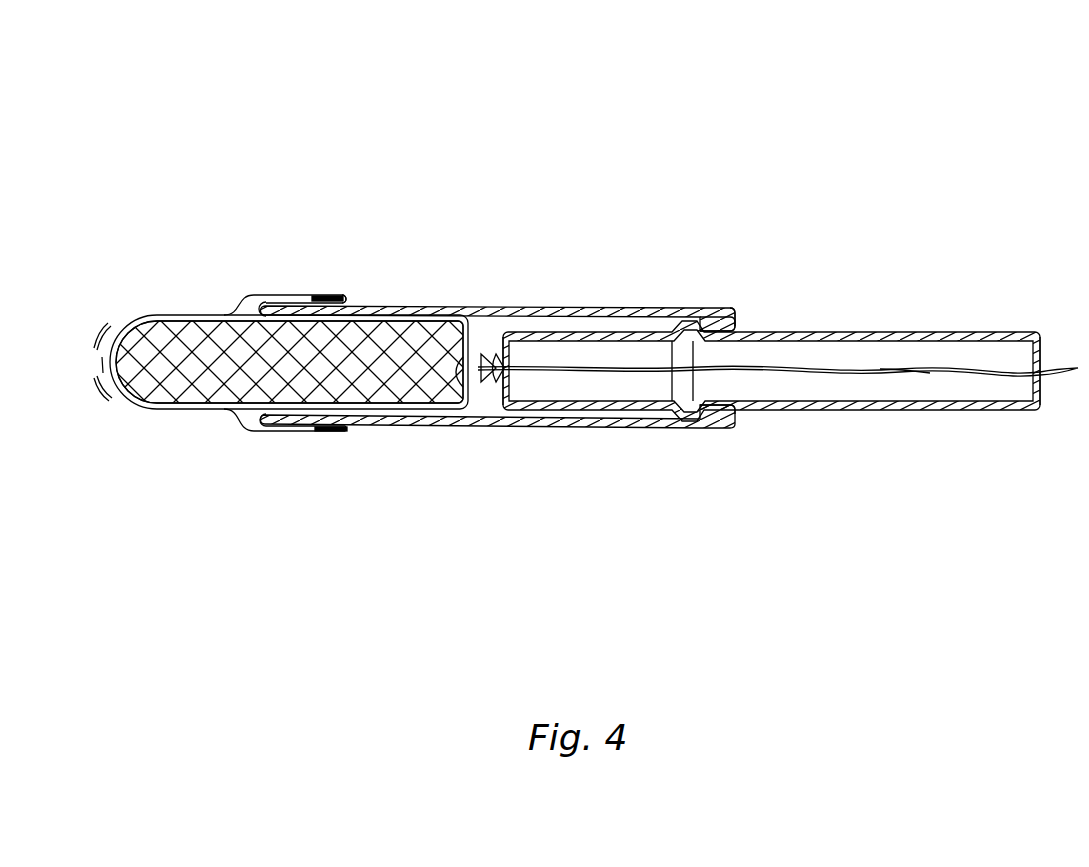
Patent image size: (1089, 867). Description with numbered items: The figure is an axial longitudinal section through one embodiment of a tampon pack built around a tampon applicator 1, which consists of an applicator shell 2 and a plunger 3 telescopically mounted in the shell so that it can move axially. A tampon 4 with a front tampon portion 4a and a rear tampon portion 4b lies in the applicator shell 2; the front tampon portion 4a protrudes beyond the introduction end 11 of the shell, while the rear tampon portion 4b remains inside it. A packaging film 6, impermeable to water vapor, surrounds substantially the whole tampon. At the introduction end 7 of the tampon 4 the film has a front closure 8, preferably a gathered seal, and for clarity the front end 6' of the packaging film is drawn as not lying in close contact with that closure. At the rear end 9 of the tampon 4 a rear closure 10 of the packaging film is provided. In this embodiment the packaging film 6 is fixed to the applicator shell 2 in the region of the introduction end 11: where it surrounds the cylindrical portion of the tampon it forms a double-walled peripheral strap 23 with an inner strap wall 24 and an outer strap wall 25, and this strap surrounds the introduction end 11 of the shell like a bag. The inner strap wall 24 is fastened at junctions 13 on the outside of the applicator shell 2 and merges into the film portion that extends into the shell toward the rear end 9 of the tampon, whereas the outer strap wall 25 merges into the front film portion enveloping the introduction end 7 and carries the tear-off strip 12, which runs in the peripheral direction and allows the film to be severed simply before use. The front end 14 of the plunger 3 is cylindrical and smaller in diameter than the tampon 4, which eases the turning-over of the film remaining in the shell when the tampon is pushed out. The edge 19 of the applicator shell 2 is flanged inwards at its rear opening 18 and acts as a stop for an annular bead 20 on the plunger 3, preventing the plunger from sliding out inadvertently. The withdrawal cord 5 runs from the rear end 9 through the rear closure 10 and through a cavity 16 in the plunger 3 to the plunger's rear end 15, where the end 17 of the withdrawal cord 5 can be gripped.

The tampon applicator 1 is at (675, 373).
The applicator shell 2 is at (578, 308).
The plunger 3 is at (823, 333).
The tampon 4 is at (415, 318).
The front tampon portion 4a is at (152, 378).
The rear tampon portion 4b is at (402, 372).
The withdrawal cord 5 is at (909, 372).
The packaging film 6 is at (284, 285).
The front end of the packaging film 6' is at (87, 223).
The introduction end of the tampon 7 is at (118, 392).
The front closure 8 is at (96, 348).
The rear end of the tampon 9 is at (462, 360).
The rear closure 10 is at (492, 318).
The introduction end of the applicator shell 11 is at (255, 432).
The tear-off strip 12 is at (327, 296).
The junctions 13 is at (337, 433).
The front end of the plunger 14 is at (505, 332).
The rear end of the plunger 15 is at (1035, 336).
The cavity in the plunger 16 is at (905, 395).
The end of the withdrawal cord 17 is at (1078, 378).
The rear opening of the applicator shell 18 is at (736, 318).
The flanged edge 19 is at (714, 320).
The annular bead 20 is at (670, 420).
The peripheral strap 23 is at (347, 302).
The inner strap wall 24 is at (259, 310).
The outer strap wall 25 is at (232, 316).